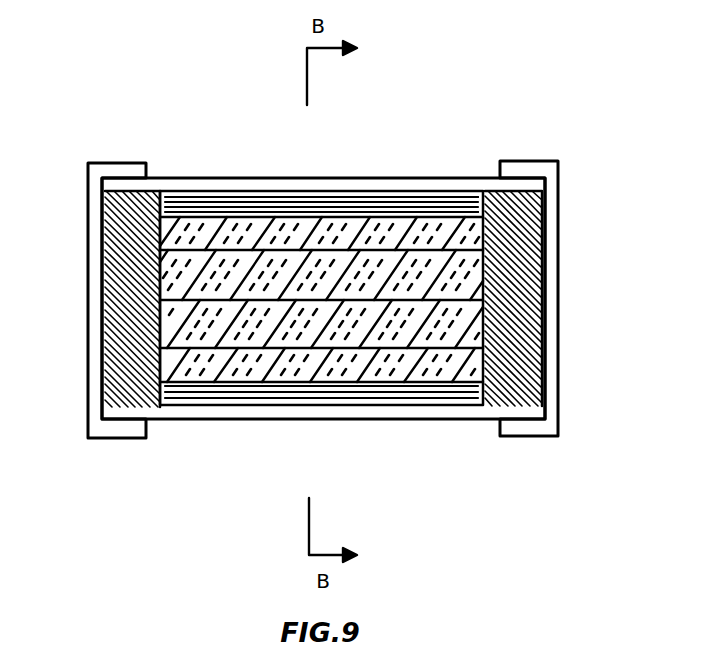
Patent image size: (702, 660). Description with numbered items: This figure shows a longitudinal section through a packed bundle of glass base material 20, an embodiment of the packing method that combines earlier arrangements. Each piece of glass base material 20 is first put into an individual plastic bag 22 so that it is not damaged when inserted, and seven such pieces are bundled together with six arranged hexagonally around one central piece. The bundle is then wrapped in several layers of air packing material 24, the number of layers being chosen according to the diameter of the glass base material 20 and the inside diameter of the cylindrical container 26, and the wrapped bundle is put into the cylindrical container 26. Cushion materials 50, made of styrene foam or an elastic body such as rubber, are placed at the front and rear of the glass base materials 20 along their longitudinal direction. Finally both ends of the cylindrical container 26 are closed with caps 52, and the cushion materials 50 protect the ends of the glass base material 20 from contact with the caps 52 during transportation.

The glass base material 20 is at (290, 233).
The plastic bag 22 is at (232, 200).
The air packing material 24 is at (463, 197).
The cylindrical container 26 is at (160, 180).
The cushion material 50 is at (106, 214).
The cap 52 is at (92, 322).